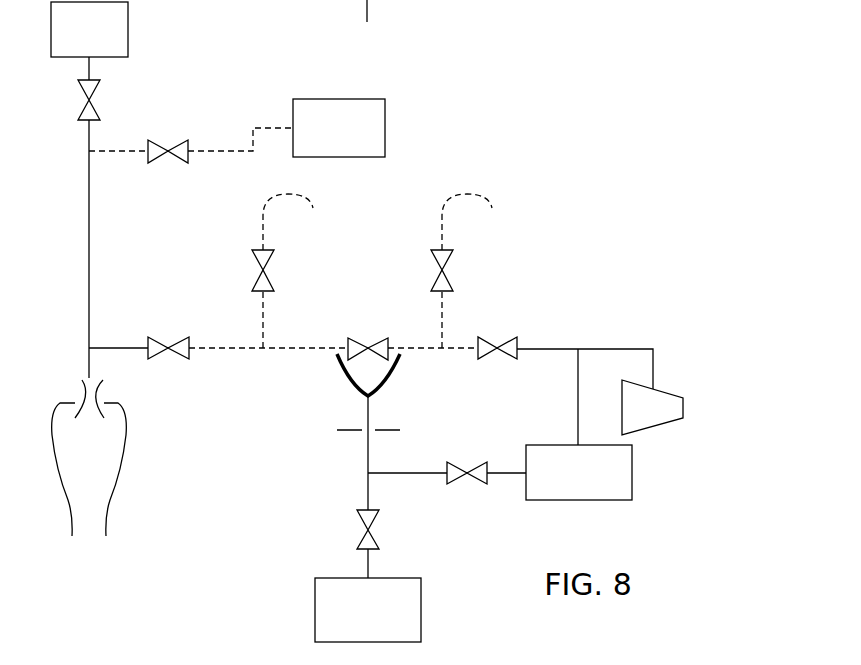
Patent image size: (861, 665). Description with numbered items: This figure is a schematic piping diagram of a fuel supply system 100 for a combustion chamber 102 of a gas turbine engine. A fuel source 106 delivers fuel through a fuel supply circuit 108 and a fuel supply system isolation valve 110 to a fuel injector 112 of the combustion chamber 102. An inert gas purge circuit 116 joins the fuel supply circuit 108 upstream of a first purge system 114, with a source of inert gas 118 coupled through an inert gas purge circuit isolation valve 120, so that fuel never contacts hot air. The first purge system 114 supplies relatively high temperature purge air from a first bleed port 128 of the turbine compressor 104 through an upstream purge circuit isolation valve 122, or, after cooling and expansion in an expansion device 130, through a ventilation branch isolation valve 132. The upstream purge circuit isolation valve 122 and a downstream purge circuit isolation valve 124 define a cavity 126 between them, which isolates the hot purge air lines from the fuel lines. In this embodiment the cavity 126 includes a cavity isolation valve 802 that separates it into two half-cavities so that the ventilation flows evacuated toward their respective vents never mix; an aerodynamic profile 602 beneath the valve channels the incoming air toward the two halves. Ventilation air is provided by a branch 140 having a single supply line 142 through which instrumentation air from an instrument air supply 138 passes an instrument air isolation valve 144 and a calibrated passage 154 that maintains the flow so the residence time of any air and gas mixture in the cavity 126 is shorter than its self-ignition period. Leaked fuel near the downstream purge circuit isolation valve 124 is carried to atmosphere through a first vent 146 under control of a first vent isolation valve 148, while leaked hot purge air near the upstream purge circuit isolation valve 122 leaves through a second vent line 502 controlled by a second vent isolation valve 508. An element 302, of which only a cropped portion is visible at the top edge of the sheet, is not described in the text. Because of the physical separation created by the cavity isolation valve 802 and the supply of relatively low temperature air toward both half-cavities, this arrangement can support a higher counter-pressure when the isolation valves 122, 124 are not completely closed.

The fuel supply system 100 is at (478, 137).
The combustion chamber 102 is at (73, 478).
The turbine compressor 104 is at (683, 406).
The fuel source 106 is at (128, 28).
The fuel supply circuit 108 is at (89, 240).
The fuel supply system isolation valve 110 is at (78, 100).
The fuel injector 112 is at (85, 392).
The first purge system 114 is at (171, 302).
The inert gas purge circuit 116 is at (129, 128).
The source of inert gas 118 is at (385, 127).
The inert gas purge circuit isolation valve 120 is at (187, 140).
The upstream purge circuit isolation valve 122 is at (487, 338).
The downstream purge circuit isolation valve 124 is at (150, 338).
The cavity 126 is at (302, 335).
The first bleed port 128 is at (654, 386).
The expansion device 130 is at (632, 472).
The ventilation branch isolation valve 132 is at (450, 462).
The instrument air supply 138 is at (421, 608).
The branch 140 is at (330, 557).
The single supply line 142 is at (368, 563).
The instrument air isolation valve 144 is at (378, 512).
The first vent 146 is at (263, 320).
The first vent isolation valve 148 is at (272, 264).
The calibrated passage 154 is at (361, 428).
The line 302 is at (366, 10).
The second vent line 502 is at (440, 320).
The second vent isolation valve 508 is at (451, 264).
The aerodynamic profile 602 is at (383, 375).
The cavity isolation valve 802 is at (380, 338).